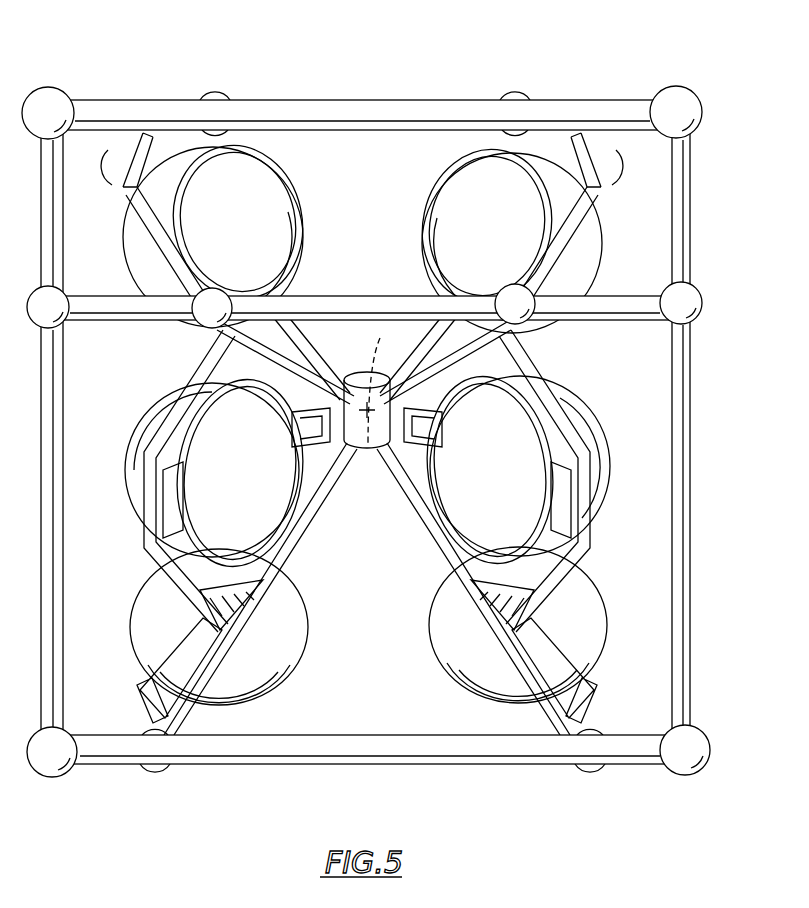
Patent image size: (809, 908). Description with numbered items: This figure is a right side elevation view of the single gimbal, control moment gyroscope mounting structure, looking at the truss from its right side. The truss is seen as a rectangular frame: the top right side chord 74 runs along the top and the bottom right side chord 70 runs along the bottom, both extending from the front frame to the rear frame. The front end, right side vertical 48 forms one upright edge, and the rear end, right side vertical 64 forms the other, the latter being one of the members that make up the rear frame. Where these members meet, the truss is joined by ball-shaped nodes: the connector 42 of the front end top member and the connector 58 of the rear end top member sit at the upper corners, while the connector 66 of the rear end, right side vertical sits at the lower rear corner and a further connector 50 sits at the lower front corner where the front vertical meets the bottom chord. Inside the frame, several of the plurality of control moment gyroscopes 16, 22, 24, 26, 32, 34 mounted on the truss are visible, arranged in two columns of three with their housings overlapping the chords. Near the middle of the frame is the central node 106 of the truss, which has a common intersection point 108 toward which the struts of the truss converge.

The control moment gyroscope 16 is at (143, 646).
The control moment gyroscope 22 is at (125, 240).
The control moment gyroscope 24 is at (145, 430).
The control moment gyroscope 26 is at (605, 628).
The control moment gyroscope 32 is at (600, 238).
The control moment gyroscope 34 is at (582, 430).
The connector 42 is at (58, 90).
The front end, right side vertical 48 is at (42, 530).
The corner connector ball 50 is at (56, 775).
The connector 58 is at (681, 92).
The rear end, right side vertical 64 is at (690, 436).
The connector 66 is at (684, 772).
The bottom right side chord 70 is at (270, 763).
The top right side chord 74 is at (378, 99).
The central node 106 is at (368, 447).
The common intersection point 108 is at (362, 383).